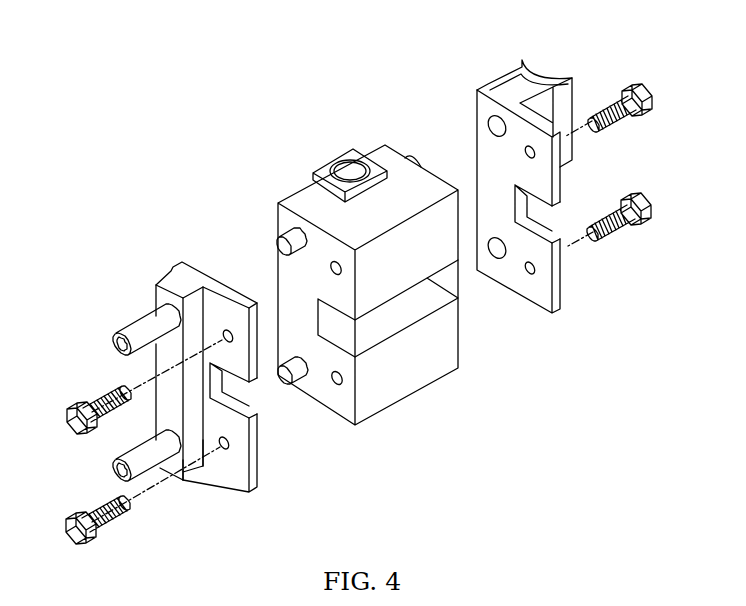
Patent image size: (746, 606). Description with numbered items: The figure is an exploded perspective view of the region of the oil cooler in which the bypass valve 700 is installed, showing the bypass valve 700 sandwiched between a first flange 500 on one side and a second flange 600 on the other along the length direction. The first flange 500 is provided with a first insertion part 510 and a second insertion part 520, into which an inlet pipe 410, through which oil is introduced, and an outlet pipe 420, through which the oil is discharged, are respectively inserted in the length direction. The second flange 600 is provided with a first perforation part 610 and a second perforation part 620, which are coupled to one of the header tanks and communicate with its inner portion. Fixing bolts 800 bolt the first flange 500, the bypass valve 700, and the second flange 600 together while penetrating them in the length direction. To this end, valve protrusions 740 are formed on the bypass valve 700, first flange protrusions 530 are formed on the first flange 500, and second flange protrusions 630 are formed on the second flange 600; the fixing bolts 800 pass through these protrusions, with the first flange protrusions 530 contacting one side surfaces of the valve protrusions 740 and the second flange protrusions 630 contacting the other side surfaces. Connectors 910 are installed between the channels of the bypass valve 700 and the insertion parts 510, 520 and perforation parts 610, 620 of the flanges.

The inlet pipe 410 is at (128, 325).
The outlet pipe 420 is at (140, 473).
The first flange 500 is at (222, 370).
The first insertion part 510 is at (160, 296).
The second insertion part 520 is at (175, 470).
The first flange protrusions 530 is at (253, 378).
The second flange 600 is at (523, 170).
The first perforation part 610 is at (489, 126).
The second perforation part 620 is at (497, 258).
The second flange protrusions 630 is at (563, 192).
The bypass valve 700 is at (333, 287).
The valve protrusions 740 is at (372, 294).
The fixing bolts 800 is at (70, 422).
The connectors 910 is at (292, 366).